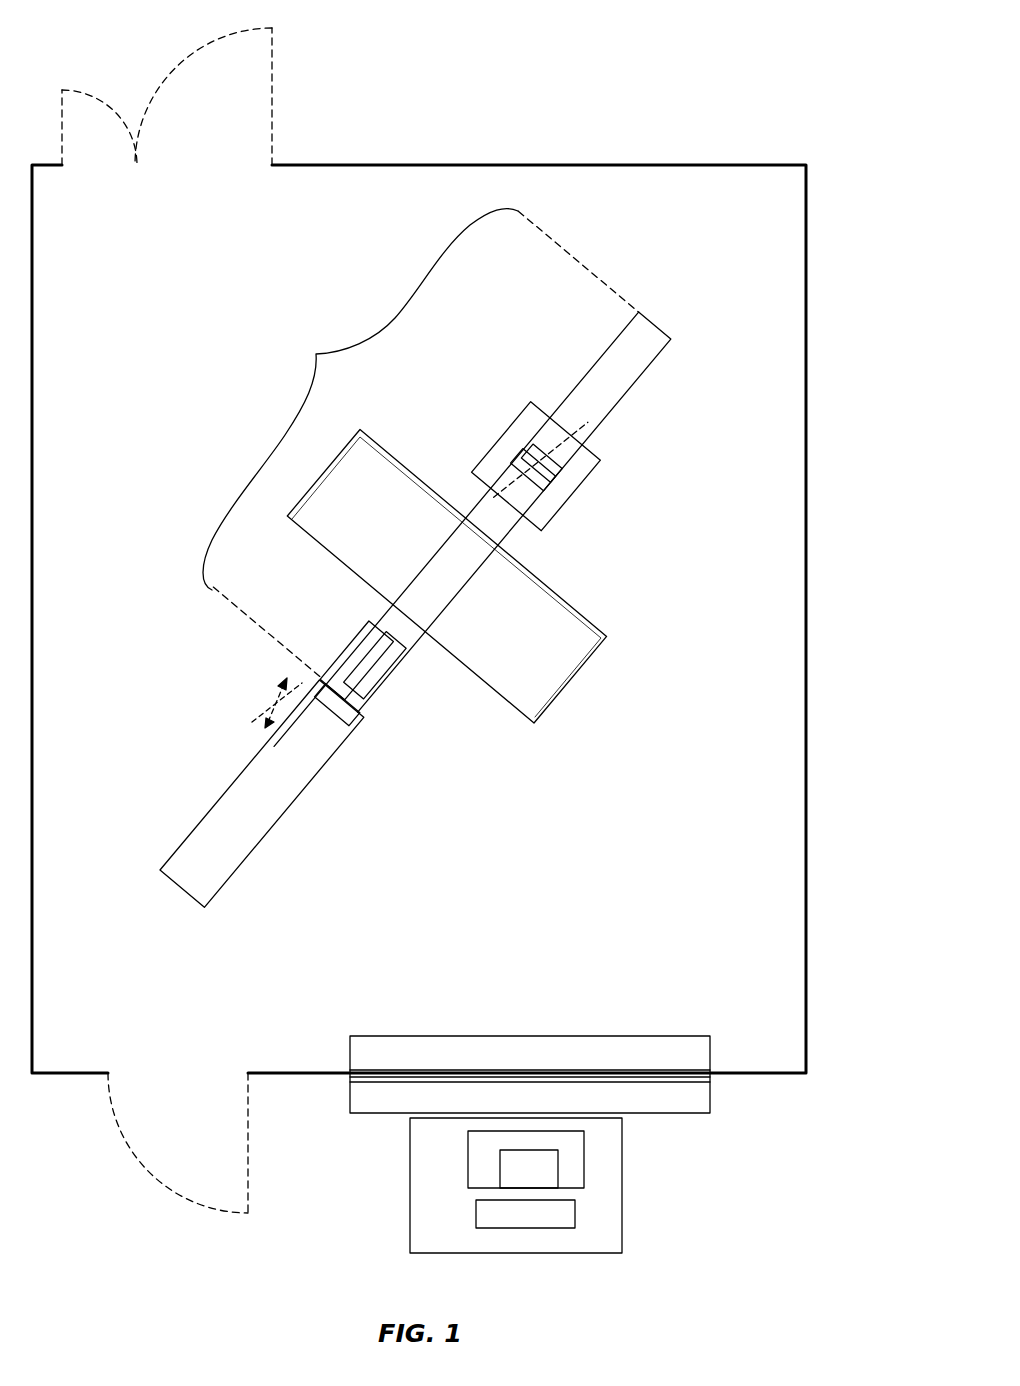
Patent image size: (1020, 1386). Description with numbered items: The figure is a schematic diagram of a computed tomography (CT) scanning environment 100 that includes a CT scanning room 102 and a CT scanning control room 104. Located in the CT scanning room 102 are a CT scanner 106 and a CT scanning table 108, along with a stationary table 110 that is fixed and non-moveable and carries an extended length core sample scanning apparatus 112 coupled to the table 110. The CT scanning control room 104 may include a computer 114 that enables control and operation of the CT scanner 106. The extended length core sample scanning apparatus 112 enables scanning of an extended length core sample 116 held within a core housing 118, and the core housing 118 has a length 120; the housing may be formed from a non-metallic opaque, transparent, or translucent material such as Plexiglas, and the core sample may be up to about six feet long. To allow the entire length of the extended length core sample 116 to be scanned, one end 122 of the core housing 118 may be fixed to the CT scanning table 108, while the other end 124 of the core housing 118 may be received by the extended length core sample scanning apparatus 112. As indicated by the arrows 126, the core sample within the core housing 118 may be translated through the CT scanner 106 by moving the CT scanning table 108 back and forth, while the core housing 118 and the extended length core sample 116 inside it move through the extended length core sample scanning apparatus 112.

The computed tomography (CT) scanning environment 100 is at (707, 58).
The CT scanning room 102 is at (808, 291).
The CT scanning control room 104 is at (529, 1185).
The CT scanner 106 is at (580, 672).
The CT scanning table 108 is at (178, 893).
The stationary table 110 is at (571, 501).
The extended length core sample scanning apparatus 112 is at (538, 472).
The computer 114 is at (461, 1167).
The extended length core sample 116 is at (388, 667).
The core housing 118 is at (363, 704).
The length 120 is at (315, 355).
The one end 122 is at (351, 632).
The other end 124 is at (508, 462).
The arrows 126 is at (260, 710).